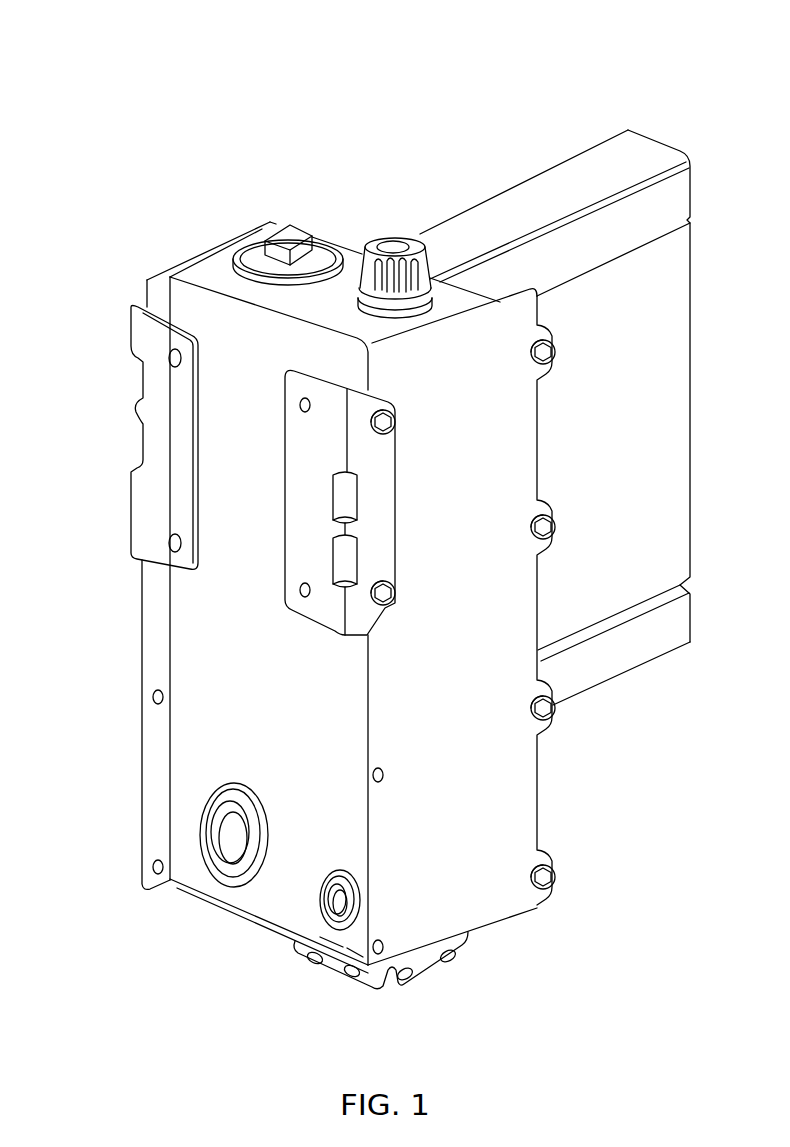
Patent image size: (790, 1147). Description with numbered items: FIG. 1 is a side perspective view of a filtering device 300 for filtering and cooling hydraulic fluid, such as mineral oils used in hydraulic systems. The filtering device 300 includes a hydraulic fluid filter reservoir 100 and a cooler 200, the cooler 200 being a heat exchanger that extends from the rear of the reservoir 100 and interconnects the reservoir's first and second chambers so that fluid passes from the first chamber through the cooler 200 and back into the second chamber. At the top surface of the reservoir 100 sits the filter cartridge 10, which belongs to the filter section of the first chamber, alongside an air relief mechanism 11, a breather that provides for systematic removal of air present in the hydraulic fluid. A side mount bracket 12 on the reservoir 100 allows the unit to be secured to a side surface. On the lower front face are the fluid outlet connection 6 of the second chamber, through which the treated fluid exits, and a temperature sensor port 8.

The filtering device 300 is at (337, 64).
The cooler 200 is at (578, 147).
The hydraulic fluid filter reservoir 100 is at (99, 679).
The side mount bracket 12 is at (147, 527).
The filter cartridge 10 is at (289, 234).
The air relief mechanism 11 is at (393, 247).
The fluid outlet connection 6 is at (233, 857).
The temperature sensor port 8 is at (330, 898).